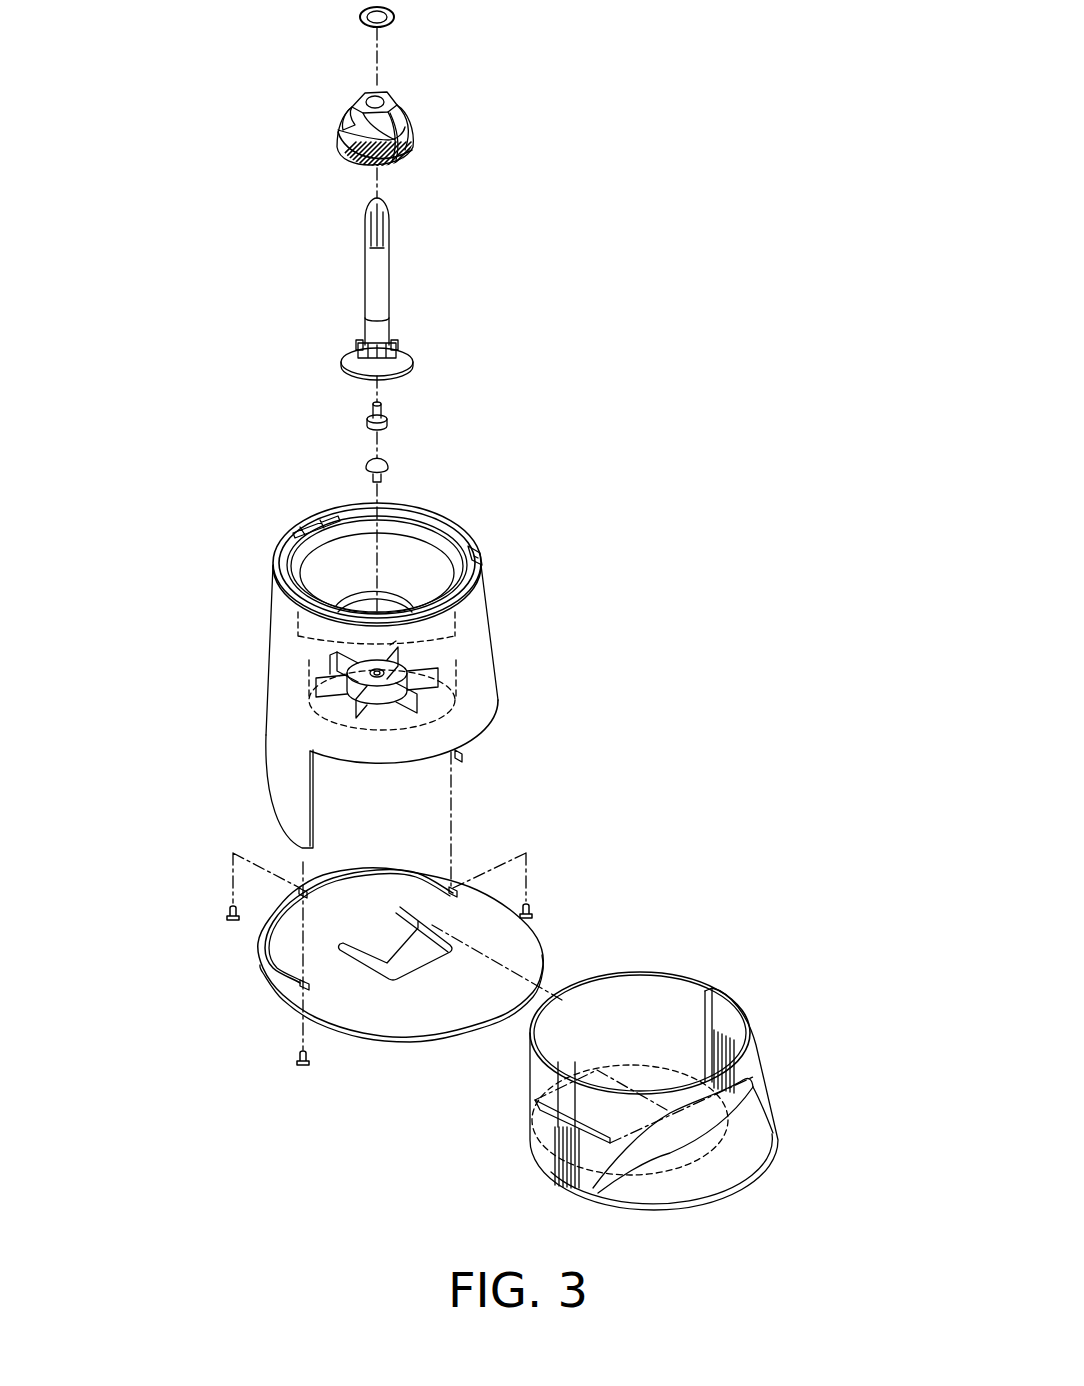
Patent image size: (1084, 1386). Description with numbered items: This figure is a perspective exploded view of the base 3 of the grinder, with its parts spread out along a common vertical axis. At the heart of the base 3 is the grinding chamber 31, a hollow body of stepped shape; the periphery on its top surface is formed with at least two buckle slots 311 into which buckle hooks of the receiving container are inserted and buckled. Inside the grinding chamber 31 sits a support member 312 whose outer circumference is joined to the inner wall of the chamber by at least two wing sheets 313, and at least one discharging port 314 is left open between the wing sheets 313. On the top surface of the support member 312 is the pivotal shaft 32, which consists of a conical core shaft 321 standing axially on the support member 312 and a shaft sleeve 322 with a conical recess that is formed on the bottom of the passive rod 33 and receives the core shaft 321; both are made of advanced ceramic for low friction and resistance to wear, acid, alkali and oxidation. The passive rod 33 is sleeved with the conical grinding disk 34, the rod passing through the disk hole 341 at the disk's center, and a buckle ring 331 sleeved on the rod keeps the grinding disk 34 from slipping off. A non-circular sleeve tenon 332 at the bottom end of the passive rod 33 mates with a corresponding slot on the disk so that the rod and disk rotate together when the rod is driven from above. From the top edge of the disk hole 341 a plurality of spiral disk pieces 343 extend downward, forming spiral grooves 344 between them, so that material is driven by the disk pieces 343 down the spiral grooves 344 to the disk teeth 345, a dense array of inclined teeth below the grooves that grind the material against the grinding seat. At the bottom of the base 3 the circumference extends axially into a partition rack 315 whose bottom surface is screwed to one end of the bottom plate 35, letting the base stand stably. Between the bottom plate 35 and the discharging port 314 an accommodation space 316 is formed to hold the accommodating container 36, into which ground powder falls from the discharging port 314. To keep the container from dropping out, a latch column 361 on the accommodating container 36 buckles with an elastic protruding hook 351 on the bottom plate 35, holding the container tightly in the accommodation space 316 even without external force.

The base 3 is at (374, 661).
The grinding chamber 31 is at (363, 553).
The buckle slots 311 is at (473, 543).
The support member 312 is at (335, 668).
The wing sheets 313 is at (440, 675).
The discharging port 314 is at (447, 697).
The partition rack 315 is at (283, 778).
The accommodation space 316 is at (410, 787).
The pivotal shaft 32 is at (477, 436).
The core shaft 321 is at (387, 458).
The shaft sleeve 322 is at (385, 412).
The passive rod 33 is at (382, 266).
The buckle ring 331 is at (395, 14).
The sleeve tenon 332 is at (360, 347).
The grinding disk 34 is at (385, 130).
The disk hole 341 is at (371, 98).
The disk pieces 343 is at (411, 132).
The spiral grooves 344 is at (355, 115).
The disk teeth 345 is at (411, 150).
The bottom plate 35 is at (401, 995).
The elastic protruding hook 351 is at (407, 950).
The accommodating container 36 is at (688, 1120).
The latch column 361 is at (635, 1138).